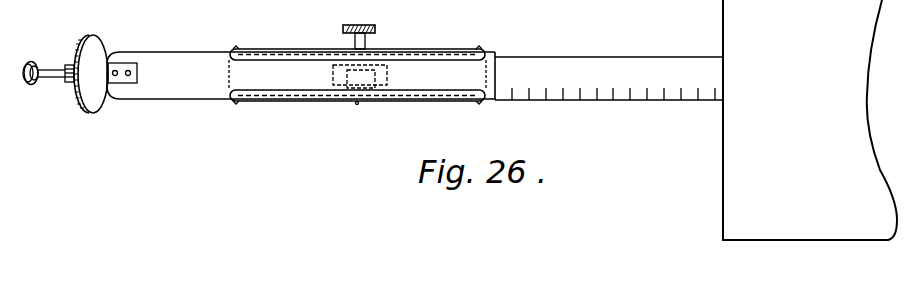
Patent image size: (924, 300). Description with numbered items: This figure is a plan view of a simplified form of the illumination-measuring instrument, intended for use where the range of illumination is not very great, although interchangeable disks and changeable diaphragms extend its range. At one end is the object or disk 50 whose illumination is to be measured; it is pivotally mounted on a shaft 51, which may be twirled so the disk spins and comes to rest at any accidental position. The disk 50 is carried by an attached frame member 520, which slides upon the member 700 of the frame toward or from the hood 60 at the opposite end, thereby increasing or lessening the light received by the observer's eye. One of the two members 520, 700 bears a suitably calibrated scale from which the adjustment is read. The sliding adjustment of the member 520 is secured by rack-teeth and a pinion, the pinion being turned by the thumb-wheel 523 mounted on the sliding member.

The disk 50 is at (100, 52).
The shaft 51 is at (56, 79).
The frame member 520 is at (301, 76).
The thumb-wheel 523 is at (378, 24).
The member of the frame 700 is at (609, 62).
The hood 60 is at (810, 120).